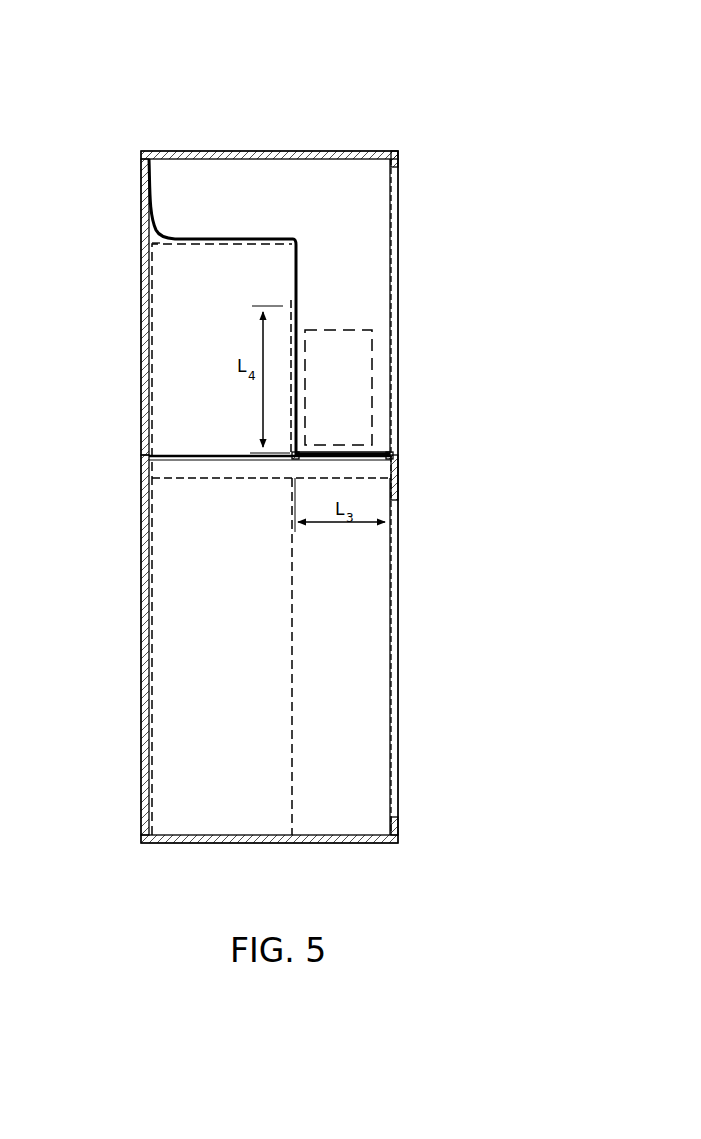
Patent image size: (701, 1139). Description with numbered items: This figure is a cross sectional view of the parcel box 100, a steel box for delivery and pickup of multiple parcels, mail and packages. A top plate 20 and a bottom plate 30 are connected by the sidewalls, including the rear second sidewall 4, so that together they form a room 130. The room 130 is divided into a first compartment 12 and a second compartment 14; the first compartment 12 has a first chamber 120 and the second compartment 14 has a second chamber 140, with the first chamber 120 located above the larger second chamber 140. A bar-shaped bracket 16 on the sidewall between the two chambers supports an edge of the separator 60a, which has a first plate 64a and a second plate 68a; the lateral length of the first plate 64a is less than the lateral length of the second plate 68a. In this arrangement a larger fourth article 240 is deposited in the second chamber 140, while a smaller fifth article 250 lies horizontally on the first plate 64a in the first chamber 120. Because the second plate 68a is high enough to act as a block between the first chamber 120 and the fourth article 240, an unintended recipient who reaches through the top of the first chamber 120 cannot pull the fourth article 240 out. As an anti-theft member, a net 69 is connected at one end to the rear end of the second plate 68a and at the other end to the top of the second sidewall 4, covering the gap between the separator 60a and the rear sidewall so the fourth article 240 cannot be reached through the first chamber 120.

The parcel box 100 is at (129, 119).
The top plate 20 is at (251, 152).
The bottom plate 30 is at (305, 843).
The first compartment 12 is at (148, 222).
The second compartment 14 is at (143, 605).
The second sidewall 4 is at (143, 265).
The net 69 is at (195, 236).
The second plate 68a is at (304, 314).
The separator 60a is at (310, 306).
The first chamber 120 is at (346, 291).
The fifth article 250 is at (355, 373).
The first plate 64a is at (352, 452).
The bracket 16 is at (160, 463).
The fourth article 240 is at (183, 548).
The second chamber 140 is at (364, 599).
The room 130 is at (557, 308).